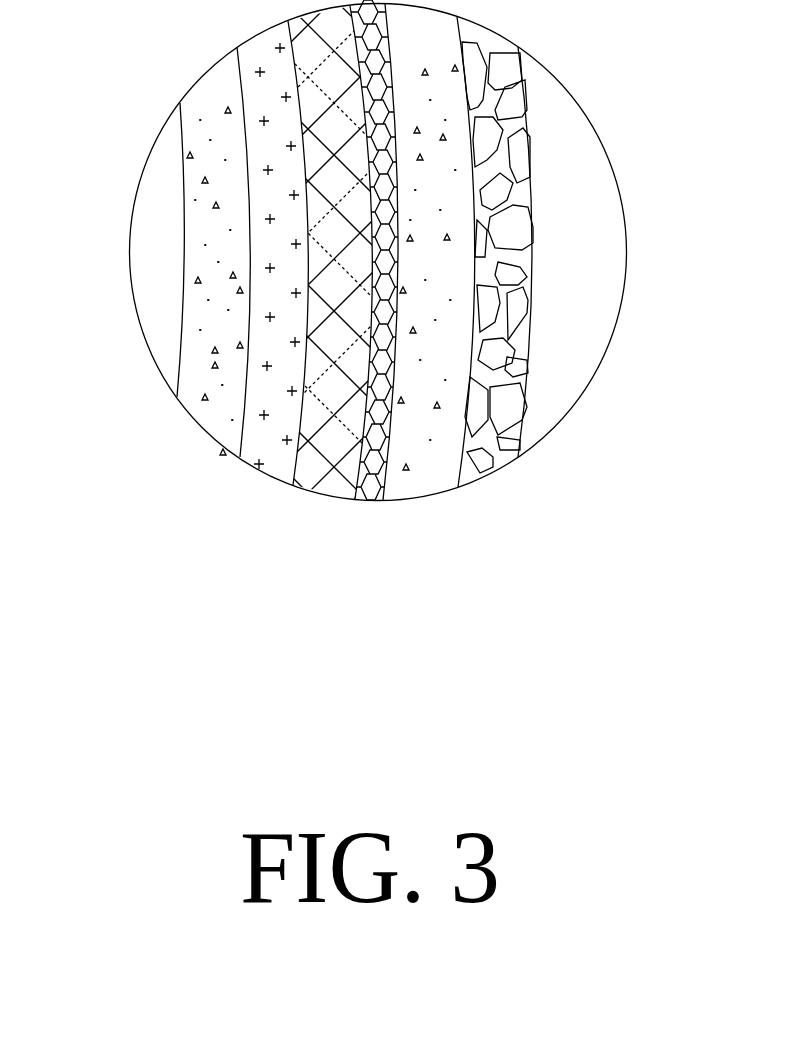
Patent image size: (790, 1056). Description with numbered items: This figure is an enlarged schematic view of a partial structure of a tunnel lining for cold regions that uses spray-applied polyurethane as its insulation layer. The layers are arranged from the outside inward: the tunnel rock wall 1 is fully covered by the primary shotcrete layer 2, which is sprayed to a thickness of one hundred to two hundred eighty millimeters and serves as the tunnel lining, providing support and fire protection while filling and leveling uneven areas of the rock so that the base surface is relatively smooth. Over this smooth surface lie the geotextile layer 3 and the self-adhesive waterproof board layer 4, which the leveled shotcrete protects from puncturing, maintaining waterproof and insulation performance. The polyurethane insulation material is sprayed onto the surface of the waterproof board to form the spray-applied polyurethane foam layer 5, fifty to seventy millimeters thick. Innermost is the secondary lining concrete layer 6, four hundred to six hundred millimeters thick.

The tunnel rock wall 1 is at (492, 420).
The primary shotcrete layer 2 is at (428, 458).
The geotextile layer 3 is at (370, 477).
The self-adhesive waterproof board layer 4 is at (325, 465).
The spray-applied polyurethane foam layer 5 is at (262, 443).
The secondary lining concrete layer 6 is at (213, 393).